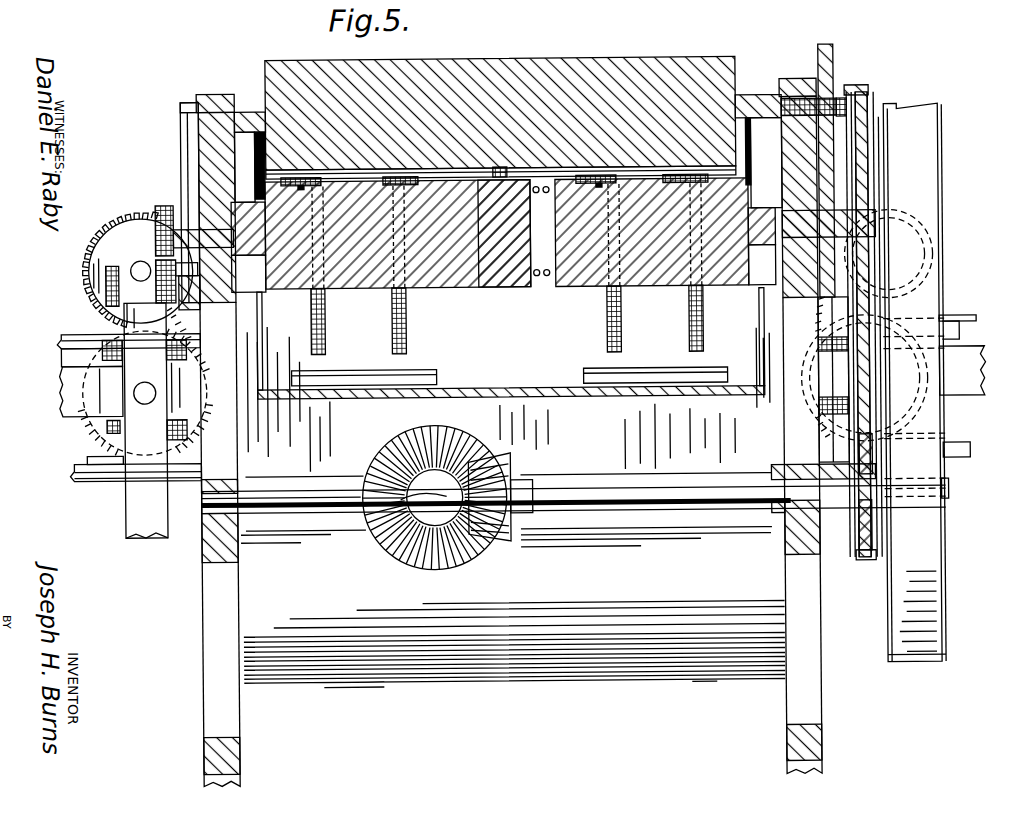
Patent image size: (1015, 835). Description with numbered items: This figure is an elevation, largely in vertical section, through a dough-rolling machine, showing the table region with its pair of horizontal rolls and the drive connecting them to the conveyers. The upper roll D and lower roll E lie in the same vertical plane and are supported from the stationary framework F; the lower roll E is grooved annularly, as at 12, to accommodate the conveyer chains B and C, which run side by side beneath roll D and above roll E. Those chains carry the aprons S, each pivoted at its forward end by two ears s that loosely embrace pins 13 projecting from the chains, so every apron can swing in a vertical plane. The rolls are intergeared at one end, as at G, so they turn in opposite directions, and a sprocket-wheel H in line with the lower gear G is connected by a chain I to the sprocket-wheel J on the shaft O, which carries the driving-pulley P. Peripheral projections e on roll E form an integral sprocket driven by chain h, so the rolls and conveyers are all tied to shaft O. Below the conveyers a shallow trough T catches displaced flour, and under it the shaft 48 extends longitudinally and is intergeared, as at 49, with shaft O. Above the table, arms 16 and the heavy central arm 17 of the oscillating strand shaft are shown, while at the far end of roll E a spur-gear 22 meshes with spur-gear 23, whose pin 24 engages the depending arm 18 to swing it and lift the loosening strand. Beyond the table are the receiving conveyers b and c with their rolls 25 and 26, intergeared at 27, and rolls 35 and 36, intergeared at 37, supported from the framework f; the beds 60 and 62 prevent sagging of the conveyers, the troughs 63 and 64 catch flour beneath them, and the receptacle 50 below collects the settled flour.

The annular grooves 12 is at (275, 195).
The pins 13 is at (298, 178).
The arms 16 is at (506, 165).
The central shaft-arm 17 is at (501, 166).
The arm 18 is at (183, 148).
The spur-gear 22 is at (163, 210).
The spur-gear 23 is at (160, 292).
The pin 24 is at (240, 292).
The upper roll 25 is at (922, 271).
The lower roll 26 is at (906, 422).
The intergearing 27 is at (848, 323).
The upper roll 35 is at (98, 262).
The lower roll 36 is at (110, 422).
The intergearing 37 is at (190, 342).
The shaft 48 is at (395, 505).
The intergearing 49 is at (492, 528).
The receptacle 50 is at (510, 676).
The bed 60 is at (947, 322).
The bed 62 is at (80, 333).
The trough 63 is at (962, 461).
The trough 64 is at (82, 480).
The conveyer chains B is at (640, 183).
The conveyer chains C is at (533, 155).
The upper roll D is at (527, 66).
The lower roll E is at (490, 287).
The stationary framework F is at (202, 545).
The gears G is at (828, 160).
The sprocket-wheel H is at (865, 178).
The chain I is at (872, 92).
The sprocket-wheel J is at (858, 556).
The shaft O is at (950, 495).
The driving-pulley P is at (946, 573).
The aprons S is at (437, 373).
The trough T is at (556, 397).
The conveyer b is at (962, 370).
The conveyer c is at (88, 456).
The sprockets e is at (544, 275).
The framework f is at (128, 500).
The chain h is at (552, 278).
The ears s is at (303, 182).